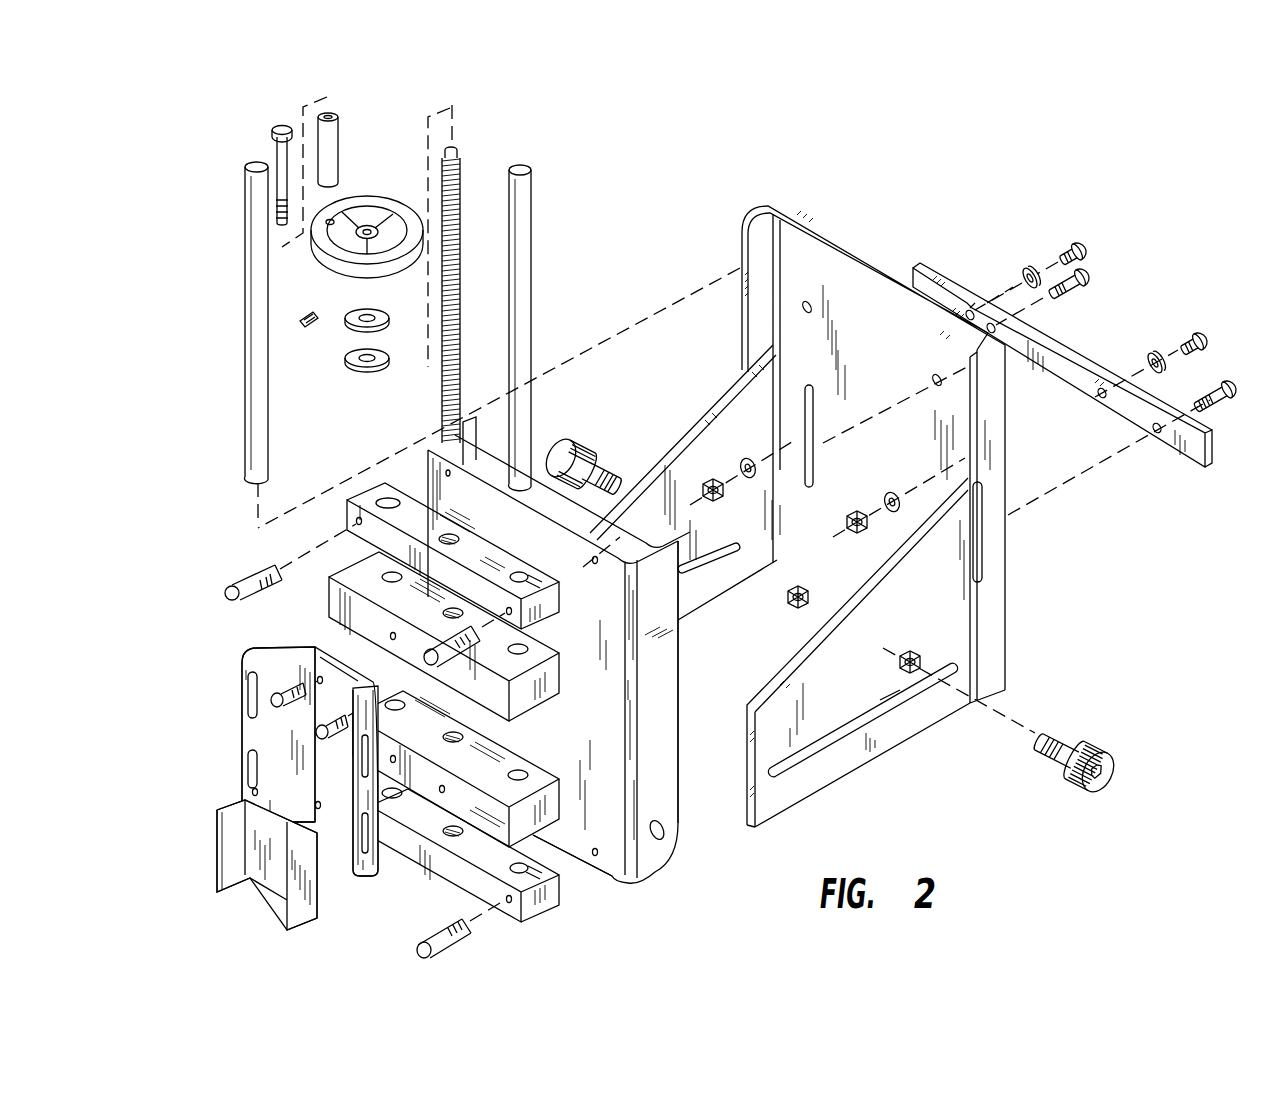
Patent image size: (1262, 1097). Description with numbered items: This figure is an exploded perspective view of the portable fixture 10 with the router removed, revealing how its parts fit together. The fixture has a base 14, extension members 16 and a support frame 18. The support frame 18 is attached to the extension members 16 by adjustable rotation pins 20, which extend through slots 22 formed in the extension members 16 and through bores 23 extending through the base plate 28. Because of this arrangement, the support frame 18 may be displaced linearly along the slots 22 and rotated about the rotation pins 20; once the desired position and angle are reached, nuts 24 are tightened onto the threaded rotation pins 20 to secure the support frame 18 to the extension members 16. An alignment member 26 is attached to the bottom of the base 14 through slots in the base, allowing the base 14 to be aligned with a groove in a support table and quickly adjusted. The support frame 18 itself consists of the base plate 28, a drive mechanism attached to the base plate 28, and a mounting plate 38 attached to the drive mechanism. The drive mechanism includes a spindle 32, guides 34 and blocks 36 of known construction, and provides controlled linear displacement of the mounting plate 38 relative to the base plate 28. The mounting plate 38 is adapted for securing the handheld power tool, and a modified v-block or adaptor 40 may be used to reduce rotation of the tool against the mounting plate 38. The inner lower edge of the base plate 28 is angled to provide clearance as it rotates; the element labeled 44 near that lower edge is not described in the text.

The portable fixture 10 is at (1130, 605).
The base 14 is at (795, 258).
The extension members 16 is at (835, 767).
The support frame 18 is at (608, 897).
The rotation pins 20 is at (566, 438).
The slots 22 is at (882, 712).
The bores 23 is at (664, 830).
The nuts 24 is at (793, 605).
The alignment member 26 is at (1063, 347).
The base plate 28 is at (604, 623).
The spindle 32 is at (462, 168).
The guides 34 is at (532, 214).
The blocks 36 is at (330, 600).
The mounting plate 38 is at (253, 741).
The adaptor 40 is at (236, 813).
The foot 44 is at (663, 862).